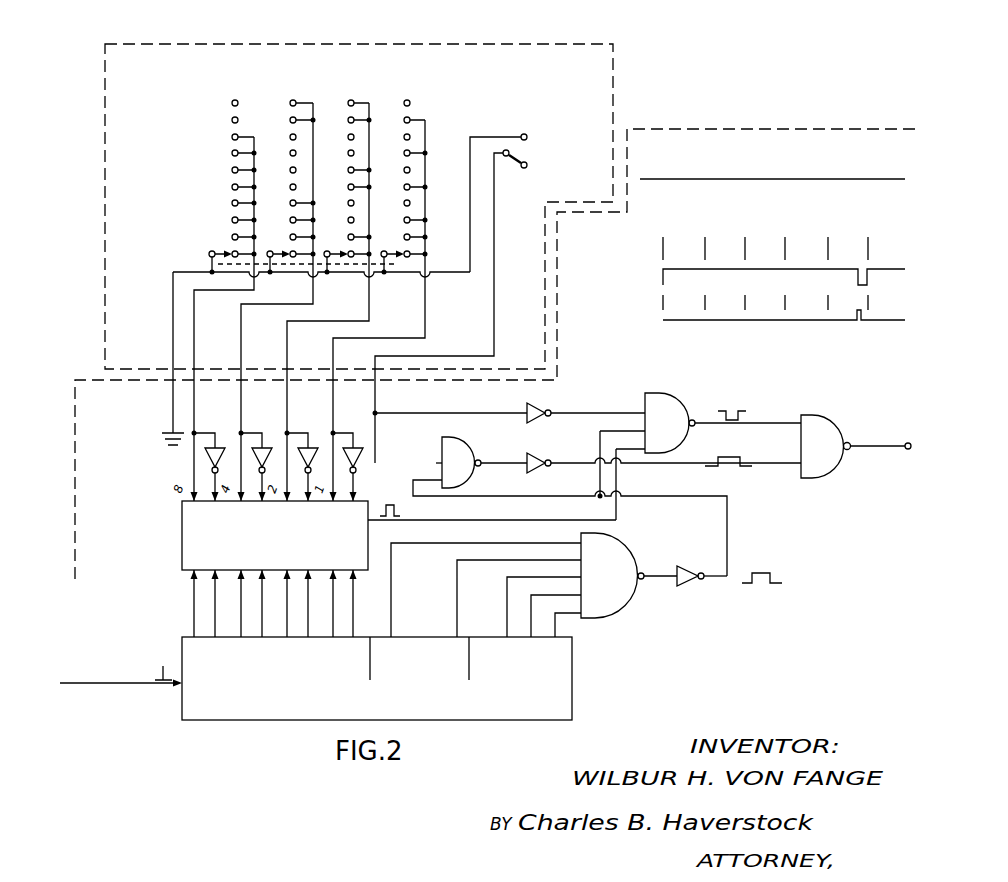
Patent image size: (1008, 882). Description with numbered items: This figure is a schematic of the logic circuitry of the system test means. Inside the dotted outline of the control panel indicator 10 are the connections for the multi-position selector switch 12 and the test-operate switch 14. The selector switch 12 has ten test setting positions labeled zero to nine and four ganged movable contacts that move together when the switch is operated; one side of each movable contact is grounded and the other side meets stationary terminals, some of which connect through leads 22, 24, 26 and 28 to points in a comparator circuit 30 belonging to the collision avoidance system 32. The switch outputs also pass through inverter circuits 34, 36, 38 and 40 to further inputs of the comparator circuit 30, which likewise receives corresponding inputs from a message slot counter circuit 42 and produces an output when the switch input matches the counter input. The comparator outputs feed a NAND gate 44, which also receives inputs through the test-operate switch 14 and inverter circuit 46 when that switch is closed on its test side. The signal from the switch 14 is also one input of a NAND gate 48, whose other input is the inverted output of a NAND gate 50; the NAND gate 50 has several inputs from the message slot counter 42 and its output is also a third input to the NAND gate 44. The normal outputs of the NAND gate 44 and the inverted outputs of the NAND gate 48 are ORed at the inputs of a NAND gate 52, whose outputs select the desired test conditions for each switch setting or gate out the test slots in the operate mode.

The control panel indicator 10 is at (618, 73).
The multi-position selector switch 12 is at (146, 190).
The test-operate switch 14 is at (528, 124).
The lead 22 is at (197, 341).
The lead 24 is at (243, 348).
The lead 26 is at (289, 361).
The lead 28 is at (336, 376).
The comparator circuit 30 is at (178, 547).
The collision avoidance system 32 is at (787, 123).
The inverter circuit 34 is at (218, 446).
The inverter circuit 36 is at (265, 446).
The inverter circuit 38 is at (311, 446).
The inverter circuit 40 is at (355, 446).
The message slot counter circuit 42 is at (211, 712).
The NAND gate 44 is at (645, 400).
The inverter circuit 46 is at (526, 410).
The NAND gate 48 is at (460, 442).
The NAND gate 50 is at (614, 553).
The NAND gate 52 is at (826, 420).